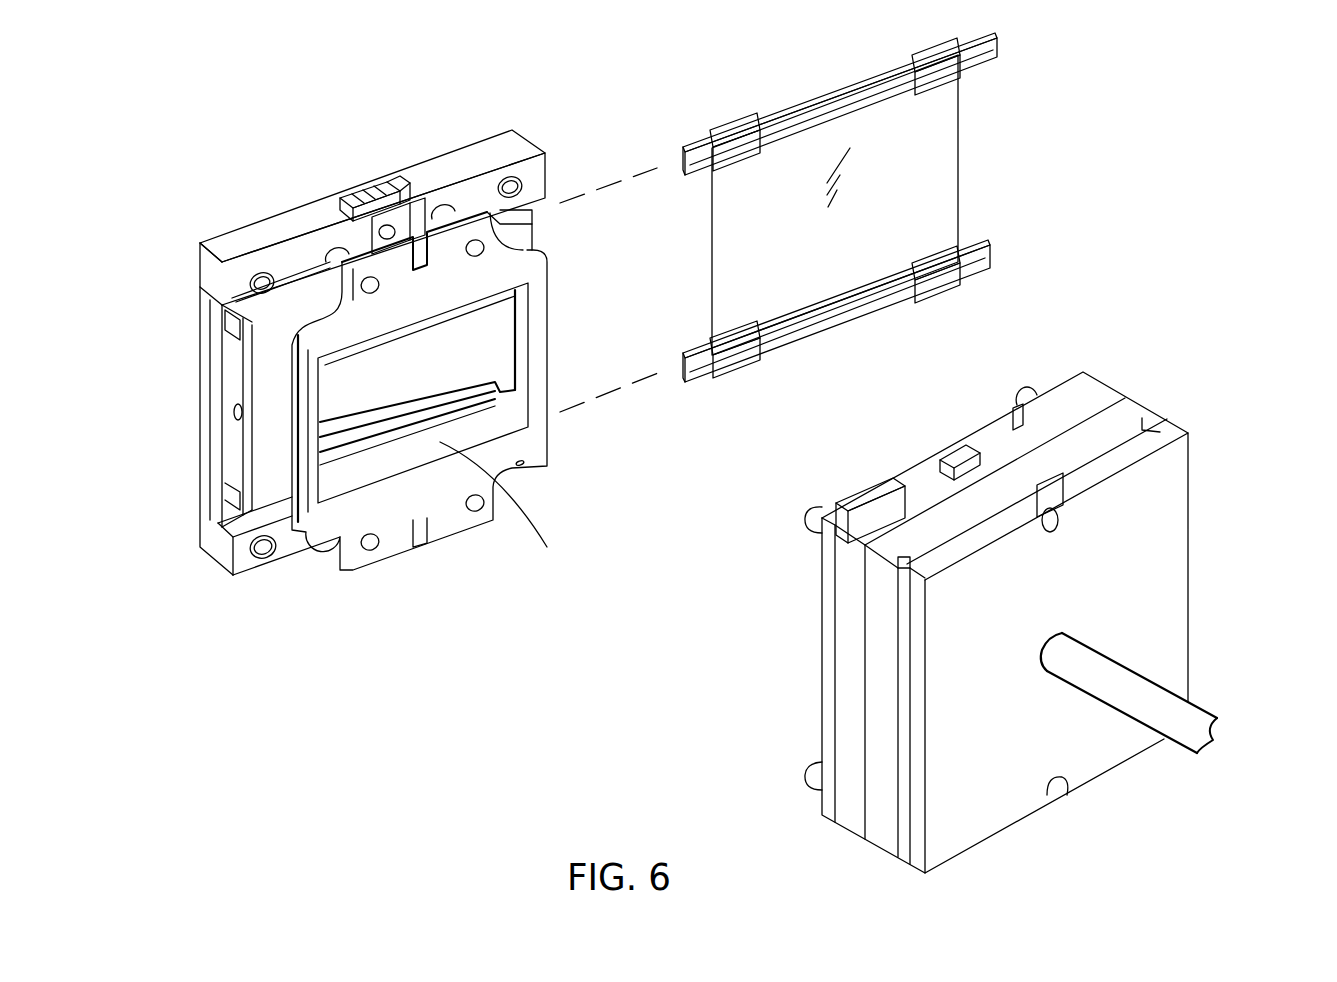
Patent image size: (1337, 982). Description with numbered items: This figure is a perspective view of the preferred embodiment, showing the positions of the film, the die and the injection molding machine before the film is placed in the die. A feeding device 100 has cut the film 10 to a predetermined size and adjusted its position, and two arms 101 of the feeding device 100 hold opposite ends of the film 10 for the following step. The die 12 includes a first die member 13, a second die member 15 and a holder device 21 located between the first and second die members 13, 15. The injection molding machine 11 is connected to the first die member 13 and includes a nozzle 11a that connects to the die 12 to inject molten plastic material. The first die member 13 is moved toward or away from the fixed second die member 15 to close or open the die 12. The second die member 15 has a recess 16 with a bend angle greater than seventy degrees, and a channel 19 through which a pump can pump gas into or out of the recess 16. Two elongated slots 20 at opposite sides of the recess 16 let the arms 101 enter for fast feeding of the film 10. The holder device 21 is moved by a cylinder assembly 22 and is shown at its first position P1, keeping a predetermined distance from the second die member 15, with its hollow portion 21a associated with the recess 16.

The film 10 is at (940, 175).
The feeding device 100 is at (888, 203).
The arms 101 is at (847, 82).
The injection molding machine 11 is at (1170, 762).
The nozzle 11a is at (1200, 720).
The die 12 is at (470, 697).
The first die member 13 is at (1200, 537).
The second die member 15 is at (452, 135).
The recess 16 is at (333, 413).
The channel 19 is at (233, 414).
The elongated slots 20 is at (530, 213).
The holder device 21 is at (468, 547).
The hollow portion 21a is at (514, 510).
The cylinder assembly 22 is at (362, 176).
The first position P1 is at (338, 598).